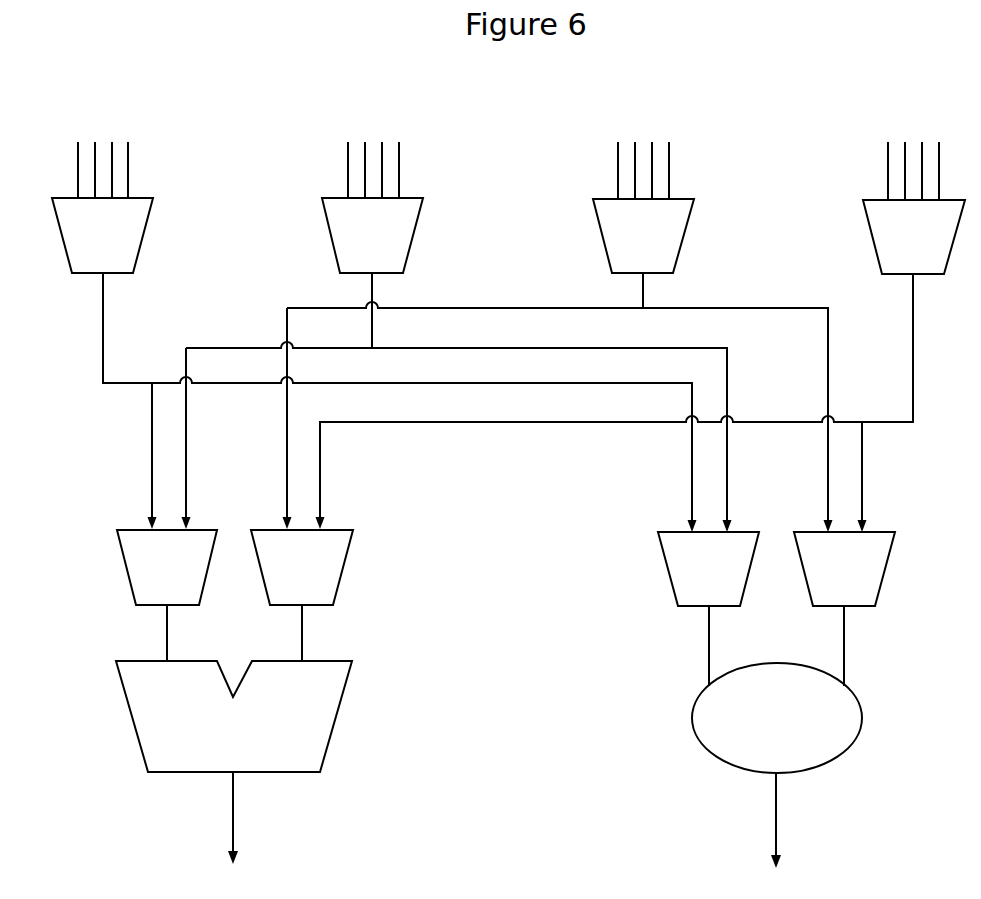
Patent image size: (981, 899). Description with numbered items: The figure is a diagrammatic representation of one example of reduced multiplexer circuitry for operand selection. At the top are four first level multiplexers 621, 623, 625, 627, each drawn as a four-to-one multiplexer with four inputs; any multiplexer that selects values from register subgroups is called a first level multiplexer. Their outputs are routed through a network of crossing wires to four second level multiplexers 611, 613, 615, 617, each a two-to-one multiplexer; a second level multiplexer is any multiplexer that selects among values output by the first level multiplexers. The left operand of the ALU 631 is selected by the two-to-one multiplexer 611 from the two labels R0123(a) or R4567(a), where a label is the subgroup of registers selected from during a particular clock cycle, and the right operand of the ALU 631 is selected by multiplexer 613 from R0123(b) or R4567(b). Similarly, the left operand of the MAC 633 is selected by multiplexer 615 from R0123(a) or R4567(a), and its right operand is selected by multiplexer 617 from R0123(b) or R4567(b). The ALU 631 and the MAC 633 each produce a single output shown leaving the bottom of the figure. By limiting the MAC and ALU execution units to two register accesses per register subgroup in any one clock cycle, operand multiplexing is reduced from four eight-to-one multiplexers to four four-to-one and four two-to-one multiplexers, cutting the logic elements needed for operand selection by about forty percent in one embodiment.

The first level multiplexer 621 is at (137, 247).
The first level multiplexer 623 is at (407, 247).
The first level multiplexer 625 is at (678, 247).
The first level multiplexer 627 is at (947, 248).
The second level multiplexer 611 is at (200, 582).
The second level multiplexer 613 is at (335, 582).
The second level multiplexer 615 is at (742, 583).
The second level multiplexer 617 is at (878, 583).
The ALU 631 is at (277, 731).
The MAC 633 is at (822, 732).